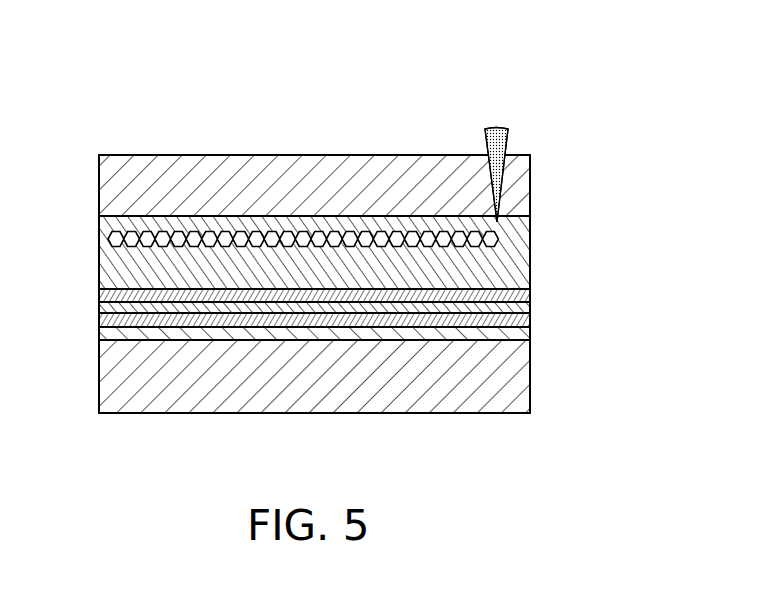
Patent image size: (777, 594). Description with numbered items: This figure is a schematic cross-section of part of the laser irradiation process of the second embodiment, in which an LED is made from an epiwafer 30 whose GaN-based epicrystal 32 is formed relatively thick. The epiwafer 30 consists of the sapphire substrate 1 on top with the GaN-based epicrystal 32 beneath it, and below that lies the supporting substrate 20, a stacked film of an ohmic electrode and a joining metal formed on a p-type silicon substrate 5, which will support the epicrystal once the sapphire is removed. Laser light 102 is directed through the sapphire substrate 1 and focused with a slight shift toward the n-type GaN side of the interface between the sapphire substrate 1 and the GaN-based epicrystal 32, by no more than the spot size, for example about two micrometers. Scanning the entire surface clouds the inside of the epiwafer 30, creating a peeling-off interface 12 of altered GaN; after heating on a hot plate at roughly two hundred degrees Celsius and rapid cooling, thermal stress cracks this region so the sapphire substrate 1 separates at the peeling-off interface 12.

The epiwafer 30 is at (265, 150).
The sapphire substrate 1 is at (512, 190).
The laser light 102 is at (497, 128).
The peeling-off interface 12 is at (110, 238).
The GaN-based epicrystal 32 is at (512, 254).
The supporting substrate 20 is at (99, 332).
The p-type silicon substrate 5 is at (512, 381).